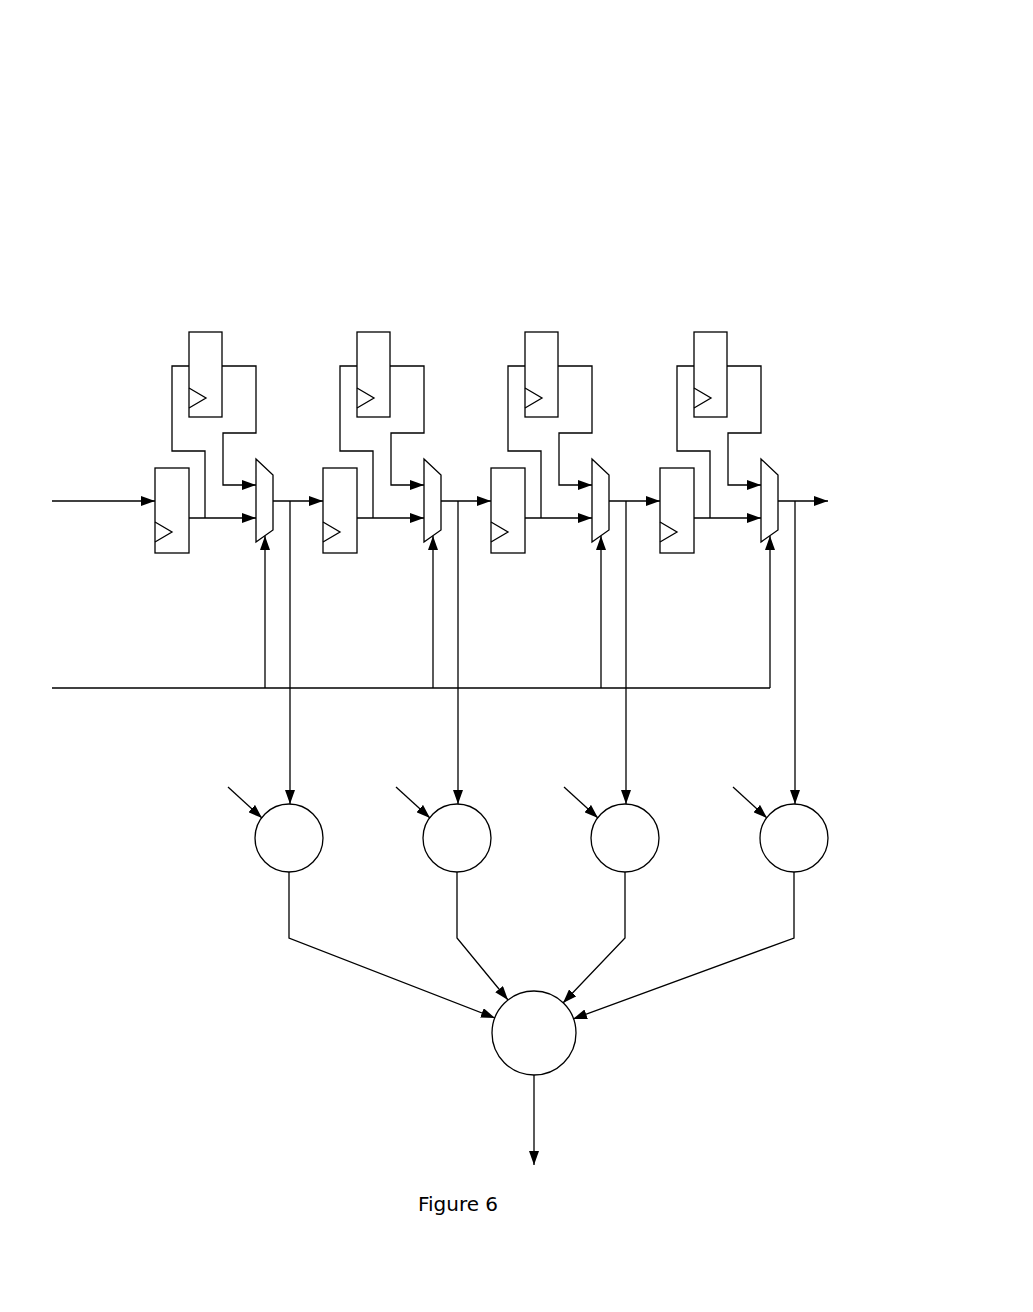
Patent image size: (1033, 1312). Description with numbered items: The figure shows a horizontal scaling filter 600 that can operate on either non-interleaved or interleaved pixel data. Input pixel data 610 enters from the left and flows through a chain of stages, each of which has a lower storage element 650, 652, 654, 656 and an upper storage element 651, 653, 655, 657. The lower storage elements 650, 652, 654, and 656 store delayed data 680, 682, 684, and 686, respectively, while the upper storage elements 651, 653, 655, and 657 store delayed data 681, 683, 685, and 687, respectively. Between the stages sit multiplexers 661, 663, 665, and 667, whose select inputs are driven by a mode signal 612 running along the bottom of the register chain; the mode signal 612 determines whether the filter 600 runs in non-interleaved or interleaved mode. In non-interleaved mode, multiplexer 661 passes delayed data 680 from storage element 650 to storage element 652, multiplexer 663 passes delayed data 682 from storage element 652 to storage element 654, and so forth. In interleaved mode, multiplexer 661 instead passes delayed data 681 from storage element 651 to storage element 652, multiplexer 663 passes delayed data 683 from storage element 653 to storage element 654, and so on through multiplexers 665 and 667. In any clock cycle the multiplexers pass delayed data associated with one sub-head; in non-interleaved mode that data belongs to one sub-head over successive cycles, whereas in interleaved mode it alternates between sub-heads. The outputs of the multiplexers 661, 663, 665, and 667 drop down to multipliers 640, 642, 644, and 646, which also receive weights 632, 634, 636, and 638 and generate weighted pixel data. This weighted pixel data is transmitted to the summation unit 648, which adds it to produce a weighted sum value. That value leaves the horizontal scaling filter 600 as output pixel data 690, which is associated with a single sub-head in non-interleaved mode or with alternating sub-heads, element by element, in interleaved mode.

The horizontal scaling filter 600 is at (439, 598).
The input pixel data 610 is at (78, 500).
The mode signal 612 is at (80, 687).
The weight 632 is at (233, 775).
The weight 634 is at (401, 775).
The weight 636 is at (570, 775).
The weight 638 is at (738, 775).
The multiplier 640 is at (262, 862).
The multiplier 642 is at (430, 862).
The multiplier 644 is at (598, 862).
The multiplier 646 is at (768, 862).
The summation unit 648 is at (502, 1062).
The storage element 650 is at (172, 553).
The storage element 651 is at (205, 332).
The storage element 652 is at (340, 553).
The storage element 653 is at (373, 332).
The storage element 654 is at (508, 553).
The storage element 655 is at (541, 332).
The storage element 656 is at (677, 553).
The storage element 657 is at (711, 332).
The multiplexer 661 is at (271, 472).
The multiplexer 663 is at (439, 472).
The multiplexer 665 is at (607, 472).
The multiplexer 667 is at (776, 472).
The delayed data 680 is at (172, 366).
The delayed data 681 is at (246, 363).
The delayed data 682 is at (340, 366).
The delayed data 683 is at (414, 363).
The delayed data 684 is at (508, 366).
The delayed data 685 is at (582, 363).
The delayed data 686 is at (677, 366).
The delayed data 687 is at (755, 363).
The output pixel data 690 is at (534, 1122).